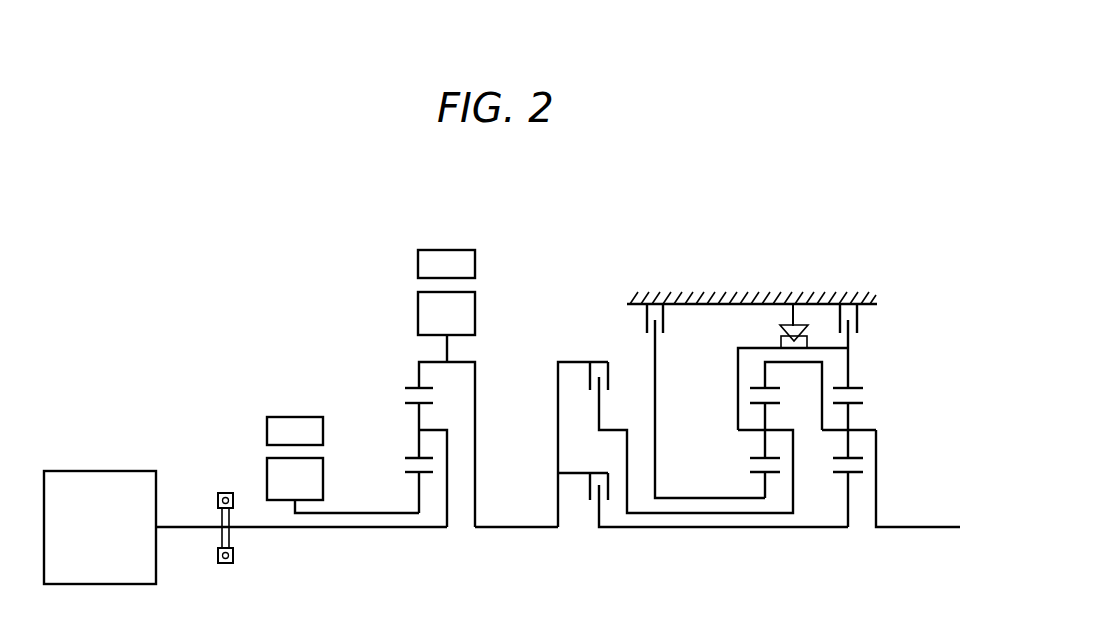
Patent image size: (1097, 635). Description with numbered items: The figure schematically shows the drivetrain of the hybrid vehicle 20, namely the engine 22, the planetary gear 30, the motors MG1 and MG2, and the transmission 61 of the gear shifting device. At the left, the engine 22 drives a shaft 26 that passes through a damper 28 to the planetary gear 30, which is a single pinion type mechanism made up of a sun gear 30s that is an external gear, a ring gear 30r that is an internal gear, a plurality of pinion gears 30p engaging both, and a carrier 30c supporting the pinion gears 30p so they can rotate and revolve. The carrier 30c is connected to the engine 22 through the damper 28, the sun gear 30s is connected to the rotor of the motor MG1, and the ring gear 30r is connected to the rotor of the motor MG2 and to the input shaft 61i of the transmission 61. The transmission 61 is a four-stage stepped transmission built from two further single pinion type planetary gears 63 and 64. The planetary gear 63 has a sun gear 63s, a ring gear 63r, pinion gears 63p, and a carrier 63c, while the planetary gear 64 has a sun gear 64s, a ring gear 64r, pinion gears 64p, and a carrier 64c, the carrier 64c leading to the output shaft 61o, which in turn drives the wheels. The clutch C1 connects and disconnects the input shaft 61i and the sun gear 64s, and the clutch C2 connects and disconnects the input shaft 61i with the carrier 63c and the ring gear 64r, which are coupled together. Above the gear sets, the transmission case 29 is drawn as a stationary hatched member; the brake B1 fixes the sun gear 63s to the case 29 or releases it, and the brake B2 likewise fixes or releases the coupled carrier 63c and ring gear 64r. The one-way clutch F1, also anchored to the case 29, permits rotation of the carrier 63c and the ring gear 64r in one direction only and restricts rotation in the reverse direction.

The hybrid vehicle 20 is at (836, 211).
The engine 22 is at (99, 470).
The crankshaft / input shaft 26 is at (183, 524).
The damper 28 is at (226, 491).
The transmission case 29 is at (696, 298).
The planetary gear 30 is at (412, 474).
The ring gear 30r is at (413, 386).
The pinion gears 30p is at (414, 405).
The carrier 30c is at (446, 447).
The sun gear 30s is at (427, 478).
The transmission 61 is at (877, 266).
The input shaft 61i is at (515, 524).
The output shaft 61o is at (911, 530).
The planetary gear 63 is at (766, 466).
The ring gear 63r is at (764, 382).
The pinion gears 63p is at (764, 412).
The carrier 63c is at (752, 431).
The sun gear 63s is at (773, 480).
The planetary gear 64 is at (875, 475).
The ring gear 64r is at (860, 387).
The pinion gears 64p is at (861, 404).
The carrier 64c is at (867, 433).
The sun gear 64s is at (837, 480).
The motor MG1 is at (297, 411).
The motor MG2 is at (447, 239).
The clutch C1 is at (590, 488).
The clutch C2 is at (590, 378).
The brake B1 is at (650, 323).
The brake B2 is at (841, 323).
The one-way clutch F1 is at (780, 336).